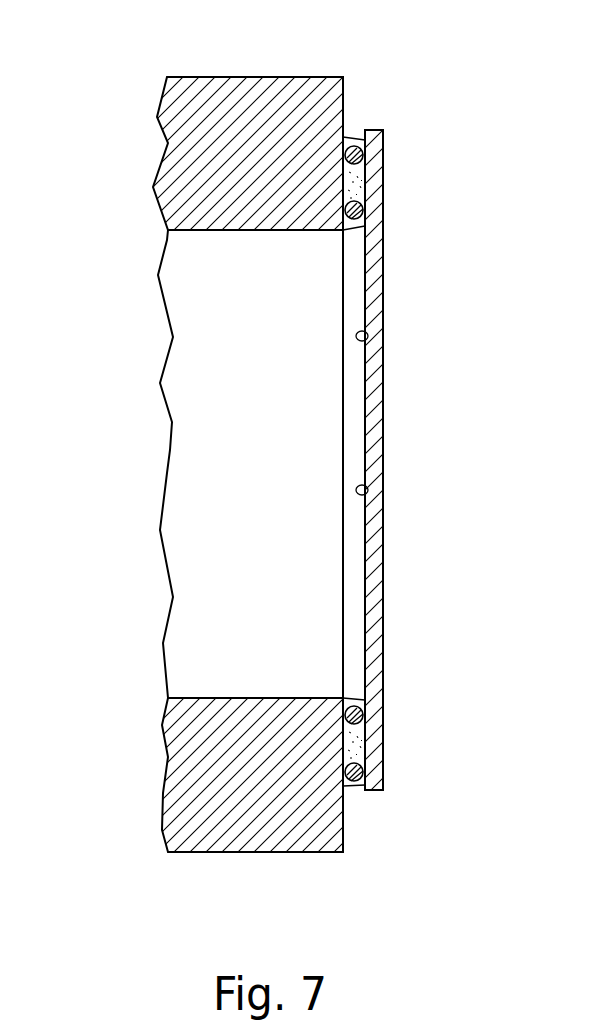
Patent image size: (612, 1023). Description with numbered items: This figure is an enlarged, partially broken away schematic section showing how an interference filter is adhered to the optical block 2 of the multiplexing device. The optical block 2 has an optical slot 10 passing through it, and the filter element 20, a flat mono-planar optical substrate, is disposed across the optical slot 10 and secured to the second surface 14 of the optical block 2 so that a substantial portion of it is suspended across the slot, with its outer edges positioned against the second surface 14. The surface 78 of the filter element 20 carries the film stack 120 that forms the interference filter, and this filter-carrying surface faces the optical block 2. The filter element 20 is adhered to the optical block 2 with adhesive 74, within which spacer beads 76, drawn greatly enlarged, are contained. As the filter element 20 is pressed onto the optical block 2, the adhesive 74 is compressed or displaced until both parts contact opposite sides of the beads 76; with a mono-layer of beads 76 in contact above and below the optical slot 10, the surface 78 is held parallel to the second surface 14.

The optical block 2 is at (307, 82).
The optical slot 10 is at (232, 421).
The second surface 14 is at (345, 105).
The filter element 20 is at (385, 373).
The adhesive 74 is at (367, 185).
The spacer beads 76 is at (367, 220).
The surface of filter element 78 is at (366, 487).
The film stack 120 is at (366, 331).